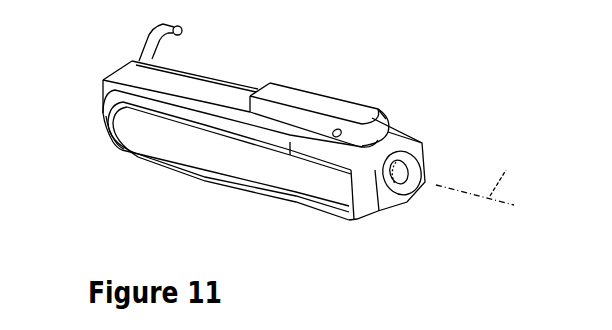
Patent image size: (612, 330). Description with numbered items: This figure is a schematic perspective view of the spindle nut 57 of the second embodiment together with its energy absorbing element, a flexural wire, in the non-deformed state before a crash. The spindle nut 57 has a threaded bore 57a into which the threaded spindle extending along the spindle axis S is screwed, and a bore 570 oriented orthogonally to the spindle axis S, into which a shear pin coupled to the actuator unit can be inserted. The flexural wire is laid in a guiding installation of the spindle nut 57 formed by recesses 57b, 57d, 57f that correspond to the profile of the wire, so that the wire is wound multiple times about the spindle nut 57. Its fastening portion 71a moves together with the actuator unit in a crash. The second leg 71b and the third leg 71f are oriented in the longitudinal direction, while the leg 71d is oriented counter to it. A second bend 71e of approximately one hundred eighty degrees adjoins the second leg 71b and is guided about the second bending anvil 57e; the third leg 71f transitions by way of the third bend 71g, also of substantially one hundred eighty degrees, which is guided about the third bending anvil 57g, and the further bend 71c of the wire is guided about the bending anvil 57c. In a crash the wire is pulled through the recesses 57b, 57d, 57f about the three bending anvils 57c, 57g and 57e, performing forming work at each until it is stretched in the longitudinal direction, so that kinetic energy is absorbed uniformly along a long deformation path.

The fastening portion 71a is at (147, 45).
The second leg 71b is at (220, 78).
The recess 57b is at (250, 89).
The bore 570 is at (339, 128).
The bending anvil 57c is at (379, 131).
The end cap 71c is at (406, 137).
The threaded bore 57a is at (416, 157).
The spindle axis S is at (475, 179).
The second bend 71e is at (100, 115).
The second bending anvil 57e is at (117, 125).
The spindle nut 57 is at (205, 147).
The recess 57f is at (180, 177).
The third leg 71f is at (208, 185).
The recess 57d is at (268, 142).
The leg 71d is at (290, 142).
The third bending anvil 57g is at (374, 230).
The third bend 71g is at (403, 208).